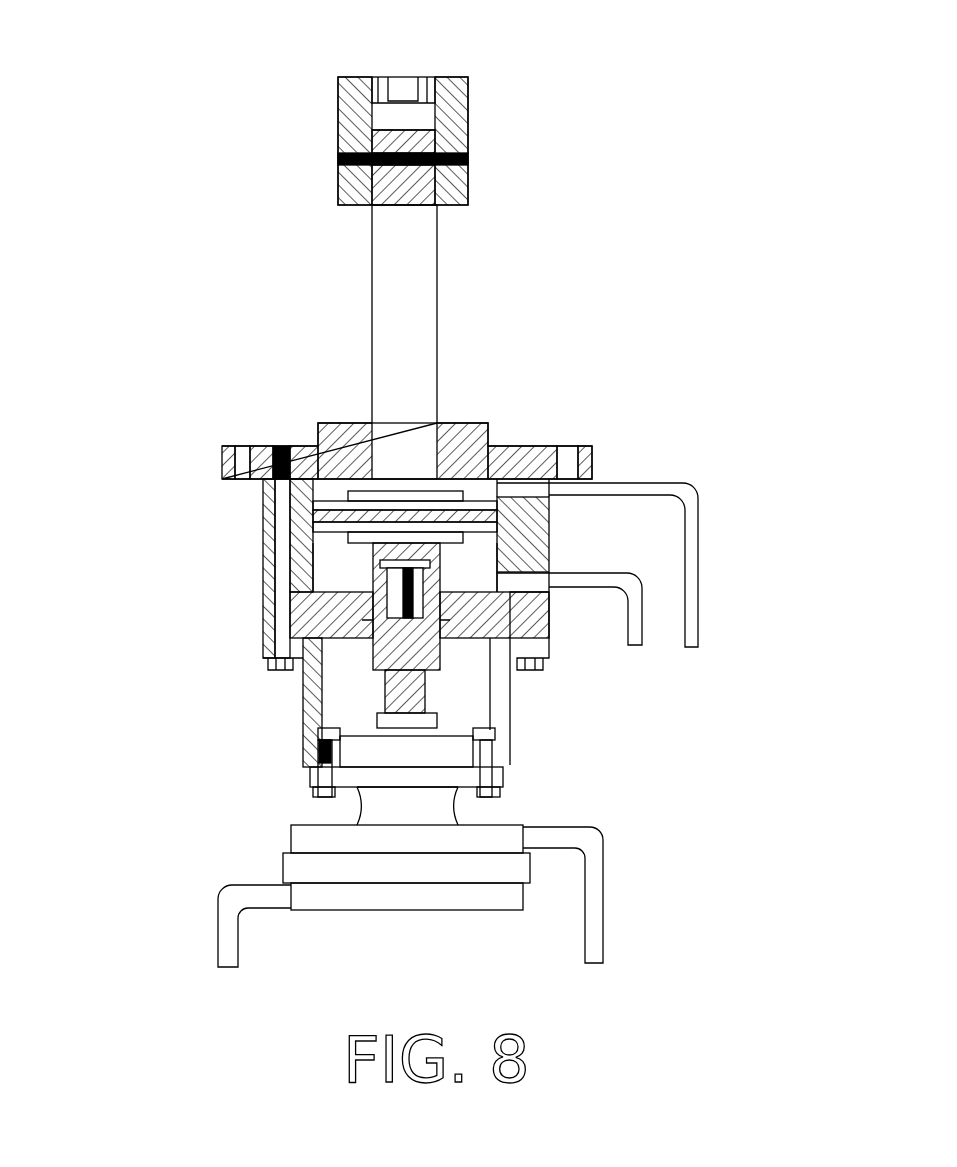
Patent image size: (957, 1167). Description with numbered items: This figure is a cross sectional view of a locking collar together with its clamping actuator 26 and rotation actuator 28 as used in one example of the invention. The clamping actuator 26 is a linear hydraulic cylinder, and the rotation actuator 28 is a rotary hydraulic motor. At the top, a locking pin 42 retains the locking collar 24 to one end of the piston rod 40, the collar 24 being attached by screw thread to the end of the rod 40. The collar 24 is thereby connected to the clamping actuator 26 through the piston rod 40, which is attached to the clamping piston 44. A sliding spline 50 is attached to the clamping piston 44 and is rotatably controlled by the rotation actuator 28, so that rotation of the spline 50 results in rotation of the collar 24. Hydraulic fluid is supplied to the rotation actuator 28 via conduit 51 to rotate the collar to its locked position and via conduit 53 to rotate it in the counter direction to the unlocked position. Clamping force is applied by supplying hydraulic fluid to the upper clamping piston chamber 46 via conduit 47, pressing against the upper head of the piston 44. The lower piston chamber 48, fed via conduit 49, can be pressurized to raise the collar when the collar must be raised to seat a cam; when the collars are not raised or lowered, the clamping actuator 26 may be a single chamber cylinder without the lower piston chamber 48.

The locking collar 24 is at (453, 77).
The locking pin 42 is at (338, 152).
The piston rod 40 is at (417, 295).
The upper clamping piston chamber 46 is at (481, 490).
The clamping piston 44 is at (350, 503).
The clamping actuator 26 is at (298, 542).
The lower piston chamber 48 is at (553, 532).
The sliding spline 50 is at (413, 668).
The conduit 47 is at (697, 620).
The conduit 49 is at (637, 617).
The rotation actuator 28 is at (318, 868).
The conduit 51 is at (590, 918).
The conduit 53 is at (228, 920).